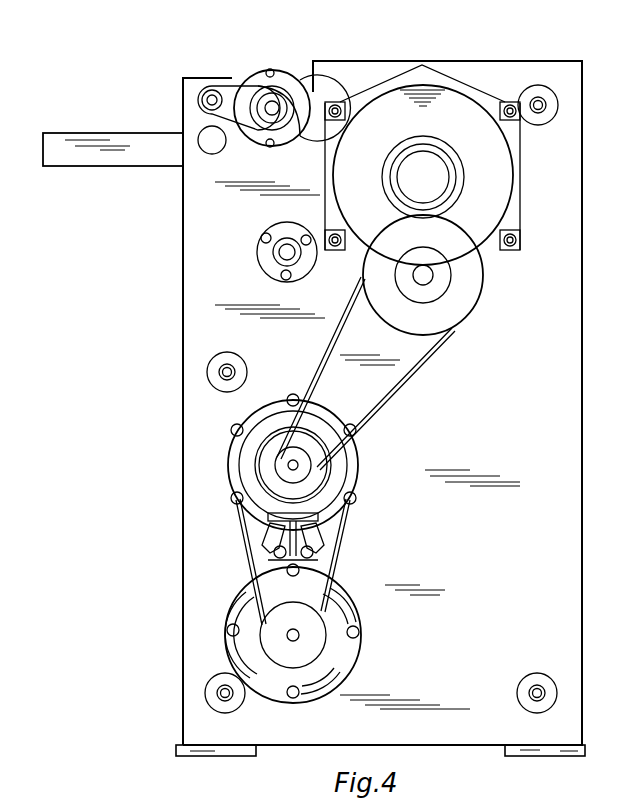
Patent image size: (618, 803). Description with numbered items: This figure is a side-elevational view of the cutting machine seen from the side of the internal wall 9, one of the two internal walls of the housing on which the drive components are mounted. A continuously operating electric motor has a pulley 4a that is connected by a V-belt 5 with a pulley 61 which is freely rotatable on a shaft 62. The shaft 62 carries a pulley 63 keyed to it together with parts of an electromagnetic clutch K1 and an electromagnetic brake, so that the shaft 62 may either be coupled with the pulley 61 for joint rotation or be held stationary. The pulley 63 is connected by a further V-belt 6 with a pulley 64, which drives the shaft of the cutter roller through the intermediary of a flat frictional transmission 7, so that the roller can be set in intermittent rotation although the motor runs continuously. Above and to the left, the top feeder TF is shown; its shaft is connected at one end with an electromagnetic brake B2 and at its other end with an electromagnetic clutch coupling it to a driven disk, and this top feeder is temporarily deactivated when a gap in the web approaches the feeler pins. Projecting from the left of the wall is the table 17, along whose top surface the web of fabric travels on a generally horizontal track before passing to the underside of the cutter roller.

The top feeder TF is at (237, 55).
The electromagnetic brake B2 is at (291, 98).
The table 17 is at (133, 140).
The flat frictional transmission 7 is at (463, 105).
The internal wall 9 is at (572, 187).
The pulley 64 is at (478, 298).
The V-belt 6 is at (404, 378).
The electromagnetic clutch K1 is at (270, 445).
The pulley 61 is at (350, 450).
The shaft 62 is at (290, 464).
The pulley 63 is at (304, 474).
The V-belt 5 is at (336, 556).
The pulley 4a is at (280, 639).